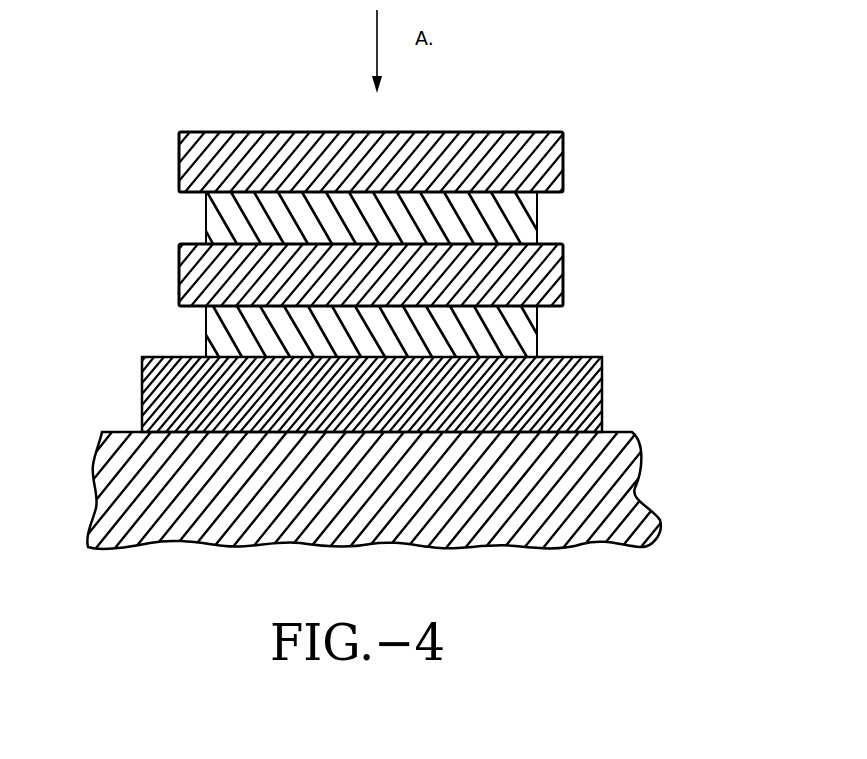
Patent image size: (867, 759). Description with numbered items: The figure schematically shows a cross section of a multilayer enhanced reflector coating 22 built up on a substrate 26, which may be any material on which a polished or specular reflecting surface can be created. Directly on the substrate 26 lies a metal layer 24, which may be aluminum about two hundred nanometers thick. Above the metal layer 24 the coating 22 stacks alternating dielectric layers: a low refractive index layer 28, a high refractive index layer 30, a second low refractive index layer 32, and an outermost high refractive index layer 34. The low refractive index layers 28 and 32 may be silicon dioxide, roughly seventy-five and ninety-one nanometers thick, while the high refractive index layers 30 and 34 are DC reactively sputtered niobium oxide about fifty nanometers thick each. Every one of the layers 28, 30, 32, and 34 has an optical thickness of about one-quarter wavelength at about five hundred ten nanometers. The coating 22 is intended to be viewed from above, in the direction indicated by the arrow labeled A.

The multilayer enhanced reflector coating 22 is at (559, 100).
The metal layer 24 is at (585, 400).
The substrate 26 is at (613, 480).
The low refractive index layer 28 is at (520, 333).
The high refractive index layer 30 is at (198, 273).
The low refractive index layer 32 is at (527, 226).
The high refractive index layer 34 is at (200, 163).